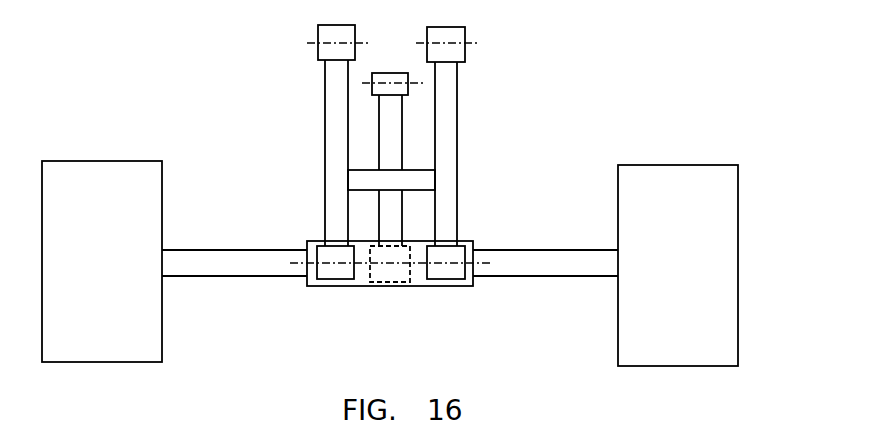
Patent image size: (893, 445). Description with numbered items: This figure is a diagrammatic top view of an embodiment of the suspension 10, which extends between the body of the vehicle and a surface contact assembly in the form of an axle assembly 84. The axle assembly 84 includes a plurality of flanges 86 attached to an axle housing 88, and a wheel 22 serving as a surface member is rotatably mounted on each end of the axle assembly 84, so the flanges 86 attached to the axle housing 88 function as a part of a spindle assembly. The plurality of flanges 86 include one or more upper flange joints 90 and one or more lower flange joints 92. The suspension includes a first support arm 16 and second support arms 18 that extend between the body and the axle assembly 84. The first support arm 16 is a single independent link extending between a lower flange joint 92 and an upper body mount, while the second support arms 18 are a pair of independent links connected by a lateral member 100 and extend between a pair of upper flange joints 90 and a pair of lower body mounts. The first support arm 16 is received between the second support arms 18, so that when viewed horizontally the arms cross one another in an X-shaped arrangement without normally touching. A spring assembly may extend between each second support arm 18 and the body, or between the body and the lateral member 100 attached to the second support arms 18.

The suspension 10 is at (560, 105).
The first support arm 16 is at (393, 138).
The second support arms 18 is at (335, 165).
The wheel 22 is at (69, 173).
The axle assembly 84 is at (437, 334).
The flanges 86 is at (310, 288).
The axle housing 88 is at (214, 258).
The upper flange joints 90 is at (341, 273).
The lower flange joint 92 is at (392, 283).
The lateral member 100 is at (420, 172).